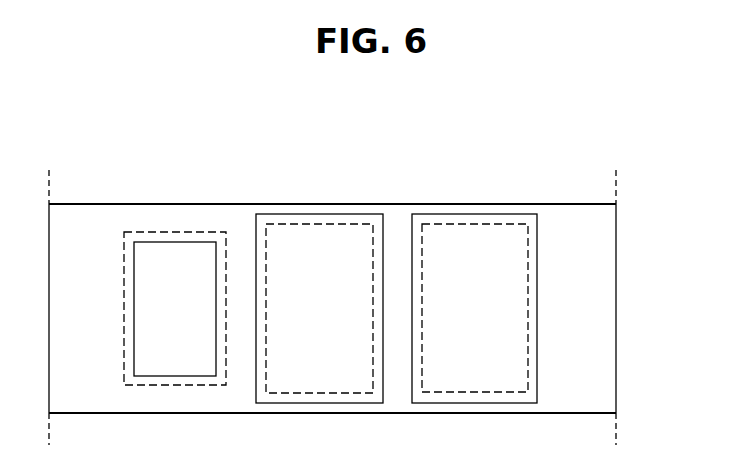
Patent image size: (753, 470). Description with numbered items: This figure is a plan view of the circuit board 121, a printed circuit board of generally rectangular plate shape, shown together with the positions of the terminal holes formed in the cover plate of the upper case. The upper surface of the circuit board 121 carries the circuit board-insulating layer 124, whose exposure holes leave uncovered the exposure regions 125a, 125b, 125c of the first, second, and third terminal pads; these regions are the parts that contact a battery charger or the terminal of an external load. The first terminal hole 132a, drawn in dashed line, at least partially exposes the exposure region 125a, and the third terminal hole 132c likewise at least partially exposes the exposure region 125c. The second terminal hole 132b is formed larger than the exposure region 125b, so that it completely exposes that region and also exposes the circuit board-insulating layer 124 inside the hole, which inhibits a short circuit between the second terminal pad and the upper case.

The circuit board 121 is at (573, 204).
The circuit board-insulating layer 124 is at (602, 301).
The exposure region of the first terminal pad 125a is at (442, 214).
The exposure region of the second terminal pad 125b is at (155, 242).
The exposure region of the third terminal pad 125c is at (287, 214).
The first terminal hole 132a is at (497, 224).
The second terminal hole 132b is at (197, 232).
The third terminal hole 132c is at (342, 224).